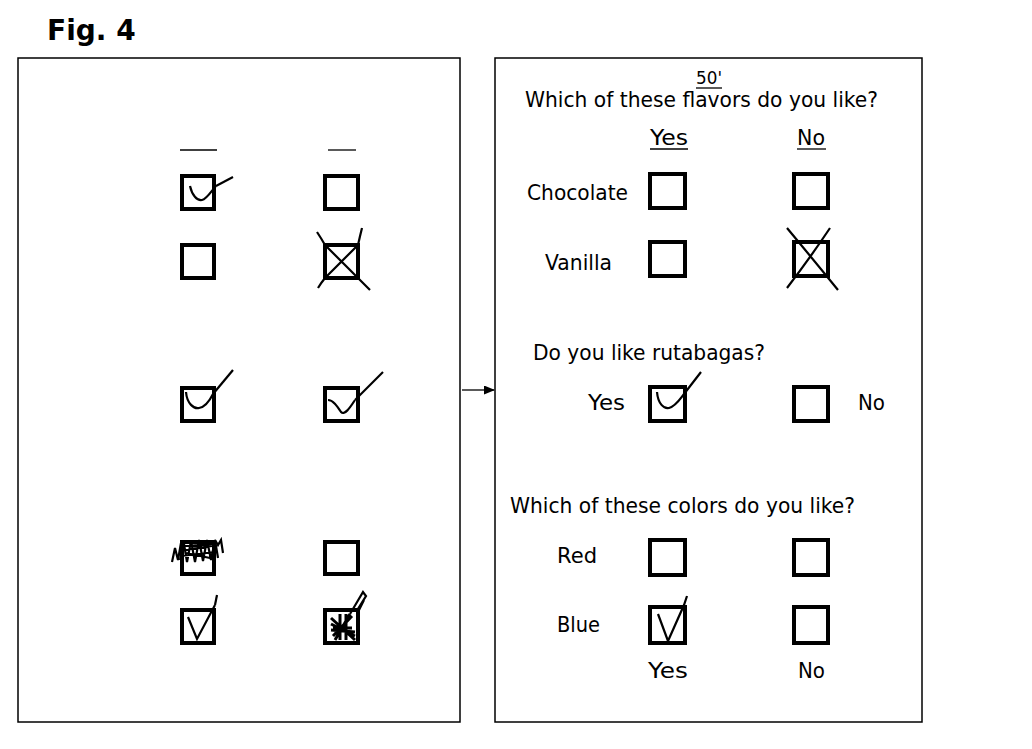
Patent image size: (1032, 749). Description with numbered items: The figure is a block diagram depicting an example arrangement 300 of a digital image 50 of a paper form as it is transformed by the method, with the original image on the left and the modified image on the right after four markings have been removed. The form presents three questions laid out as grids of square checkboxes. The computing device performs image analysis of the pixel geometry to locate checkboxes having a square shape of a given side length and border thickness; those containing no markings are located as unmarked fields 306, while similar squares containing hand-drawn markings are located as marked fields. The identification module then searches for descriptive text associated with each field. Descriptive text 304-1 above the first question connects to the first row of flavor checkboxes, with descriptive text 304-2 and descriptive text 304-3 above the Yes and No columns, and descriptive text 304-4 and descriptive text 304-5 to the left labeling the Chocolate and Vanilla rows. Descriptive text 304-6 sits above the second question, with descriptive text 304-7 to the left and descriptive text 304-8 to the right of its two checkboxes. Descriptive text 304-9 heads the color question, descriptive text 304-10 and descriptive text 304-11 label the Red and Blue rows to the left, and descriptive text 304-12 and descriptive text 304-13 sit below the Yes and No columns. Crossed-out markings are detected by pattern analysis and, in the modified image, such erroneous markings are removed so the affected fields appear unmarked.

The digital image 50 is at (252, 88).
The example arrangement 300 is at (882, 50).
The descriptive text 304-1 is at (388, 91).
The descriptive text 304-2 is at (223, 140).
The descriptive text 304-3 is at (369, 143).
The descriptive text 304-4 is at (117, 176).
The descriptive text 304-5 is at (120, 248).
The descriptive text 304-6 is at (140, 332).
The descriptive text 304-7 is at (117, 402).
The descriptive text 304-8 is at (402, 387).
The descriptive text 304-9 is at (130, 488).
The descriptive text 304-10 is at (113, 545).
The descriptive text 304-11 is at (113, 648).
The descriptive text 304-12 is at (178, 690).
The descriptive text 304-13 is at (333, 690).
The unmarked field 306 is at (205, 244).